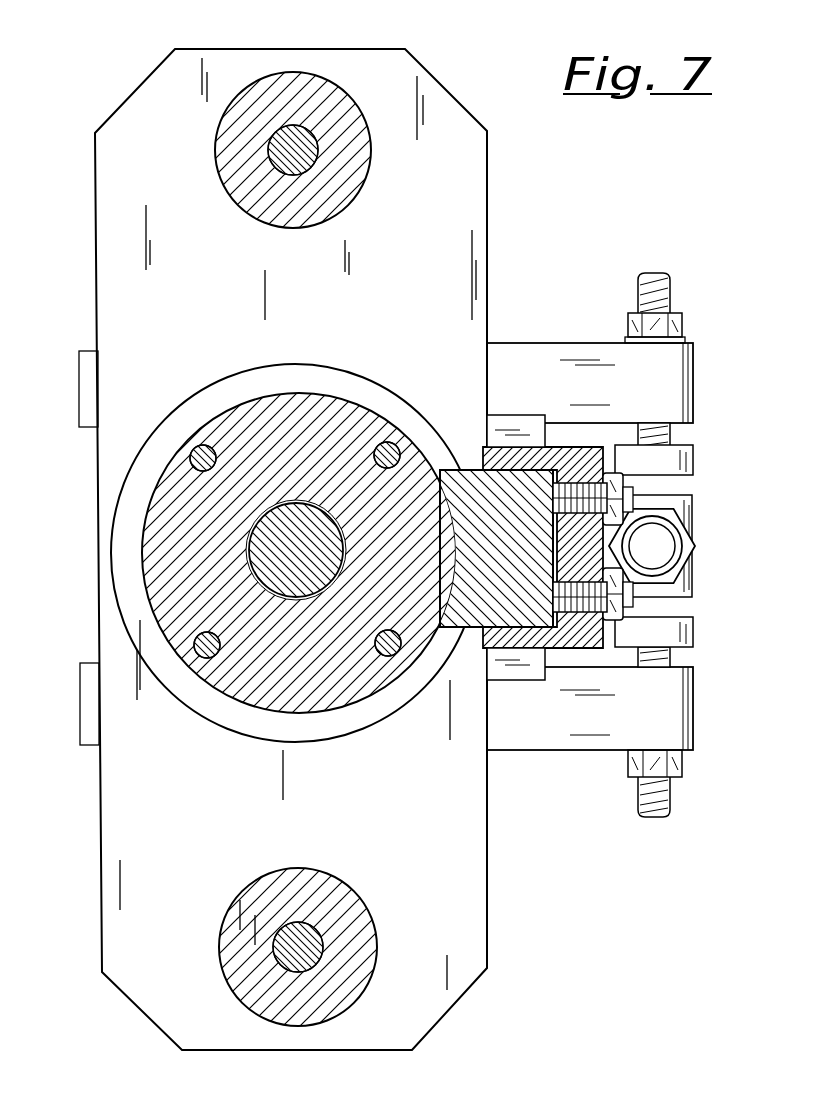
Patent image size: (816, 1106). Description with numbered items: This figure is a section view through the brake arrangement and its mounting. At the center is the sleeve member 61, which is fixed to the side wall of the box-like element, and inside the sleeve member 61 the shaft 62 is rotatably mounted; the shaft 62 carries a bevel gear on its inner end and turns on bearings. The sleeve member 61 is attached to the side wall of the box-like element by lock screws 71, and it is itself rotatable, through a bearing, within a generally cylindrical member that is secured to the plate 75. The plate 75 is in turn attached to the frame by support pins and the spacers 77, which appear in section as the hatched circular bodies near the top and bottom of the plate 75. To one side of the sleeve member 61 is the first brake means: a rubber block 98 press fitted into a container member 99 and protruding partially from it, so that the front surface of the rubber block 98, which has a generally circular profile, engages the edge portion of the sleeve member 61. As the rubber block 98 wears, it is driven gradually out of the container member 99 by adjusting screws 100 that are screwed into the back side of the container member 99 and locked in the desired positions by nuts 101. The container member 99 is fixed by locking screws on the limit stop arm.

The sleeve member 61 is at (268, 412).
The shaft 62 is at (263, 543).
The lock screws 71 is at (197, 642).
The plate 75 is at (470, 883).
The spacers 77 is at (320, 85).
The rubber block 98 is at (467, 493).
The container member 99 is at (510, 457).
The adjusting screws 100 is at (585, 490).
The nuts 101 is at (617, 470).